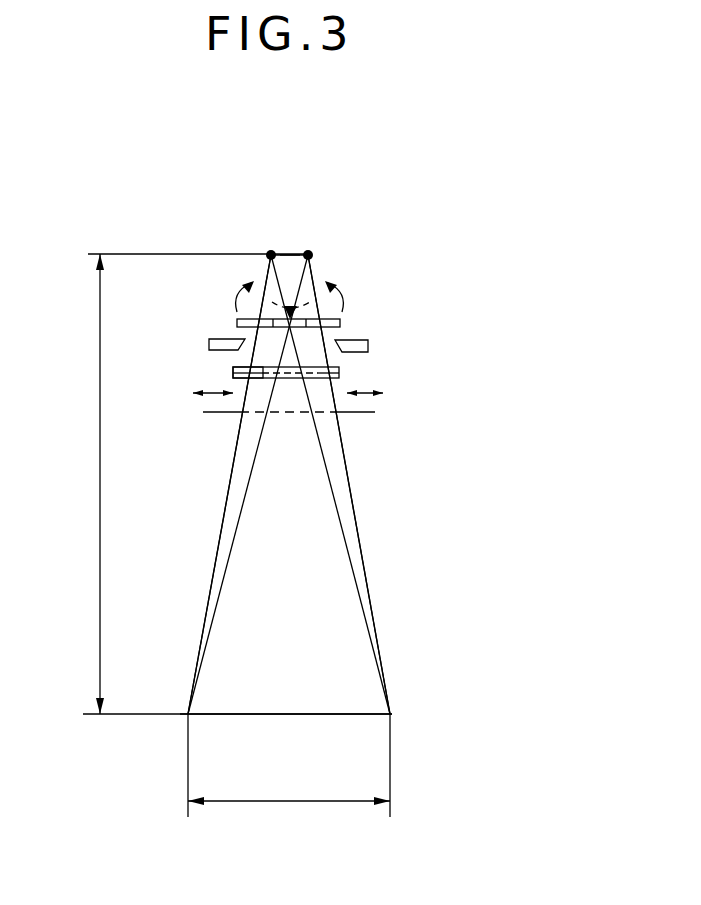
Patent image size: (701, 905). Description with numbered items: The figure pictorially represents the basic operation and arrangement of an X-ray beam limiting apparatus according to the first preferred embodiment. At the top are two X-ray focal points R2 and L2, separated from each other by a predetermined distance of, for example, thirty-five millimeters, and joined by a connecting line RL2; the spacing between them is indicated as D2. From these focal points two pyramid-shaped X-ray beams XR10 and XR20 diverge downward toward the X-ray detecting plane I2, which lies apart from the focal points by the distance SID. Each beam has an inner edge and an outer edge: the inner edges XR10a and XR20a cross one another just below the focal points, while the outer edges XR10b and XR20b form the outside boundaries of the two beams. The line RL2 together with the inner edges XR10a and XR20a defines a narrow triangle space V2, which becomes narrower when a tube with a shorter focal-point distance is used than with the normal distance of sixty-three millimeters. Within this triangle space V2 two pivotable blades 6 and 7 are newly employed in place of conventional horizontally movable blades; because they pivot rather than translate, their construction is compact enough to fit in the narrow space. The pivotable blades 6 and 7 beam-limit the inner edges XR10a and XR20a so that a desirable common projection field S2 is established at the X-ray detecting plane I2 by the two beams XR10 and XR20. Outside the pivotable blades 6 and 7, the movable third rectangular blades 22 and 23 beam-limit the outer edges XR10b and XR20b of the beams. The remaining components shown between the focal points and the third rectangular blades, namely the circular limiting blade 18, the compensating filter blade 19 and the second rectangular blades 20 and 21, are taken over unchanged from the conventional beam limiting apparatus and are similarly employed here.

The pivotable blade 6 is at (312, 262).
The pivotable blade 7 is at (267, 262).
The circular limiting blade 18 is at (340, 323).
The compensating filter blade 19 is at (212, 338).
The second rectangular blade 20 is at (339, 371).
The second rectangular blade 21 is at (233, 372).
The third rectangular blade 22 is at (373, 413).
The third rectangular blade 23 is at (213, 412).
The X-ray focal point L2 is at (270, 250).
The X-ray focal point R2 is at (312, 250).
The focal spot spacing D2 is at (286, 250).
The line connecting the focal points RL2 is at (298, 250).
The triangle space V2 is at (311, 259).
The source-to-image distance SID is at (68, 484).
The common projection field S2 is at (289, 820).
The X-ray detecting plane I2 is at (366, 716).
The pyramid-shaped X-ray beam XR10 is at (364, 527).
The inner edge of X-ray beam XR10a is at (208, 620).
The outer edge of X-ray beam XR10b is at (363, 562).
The pyramid-shaped X-ray beam XR20 is at (226, 472).
The inner edge of X-ray beam XR20a is at (372, 629).
The outer edge of X-ray beam XR20b is at (220, 535).